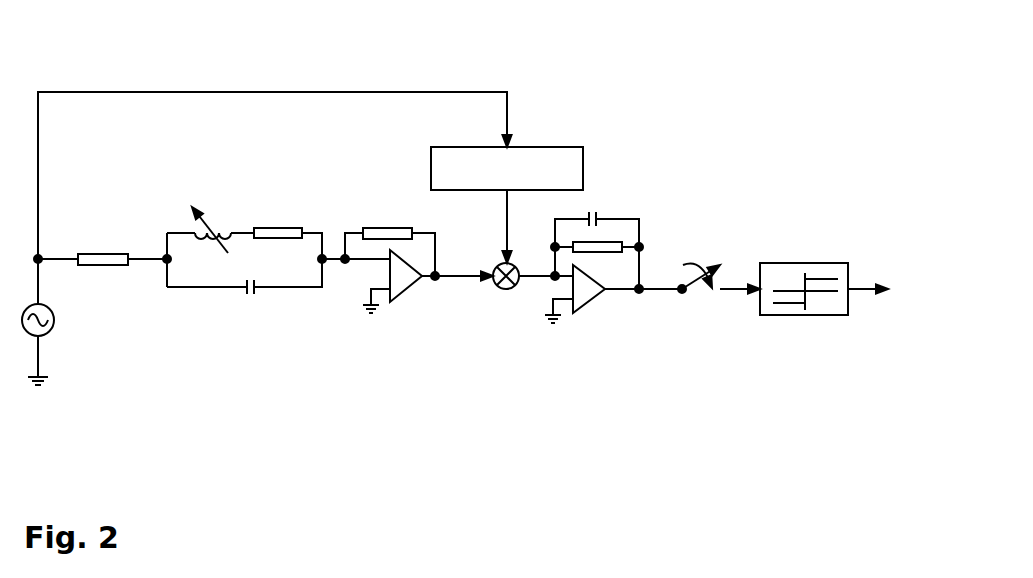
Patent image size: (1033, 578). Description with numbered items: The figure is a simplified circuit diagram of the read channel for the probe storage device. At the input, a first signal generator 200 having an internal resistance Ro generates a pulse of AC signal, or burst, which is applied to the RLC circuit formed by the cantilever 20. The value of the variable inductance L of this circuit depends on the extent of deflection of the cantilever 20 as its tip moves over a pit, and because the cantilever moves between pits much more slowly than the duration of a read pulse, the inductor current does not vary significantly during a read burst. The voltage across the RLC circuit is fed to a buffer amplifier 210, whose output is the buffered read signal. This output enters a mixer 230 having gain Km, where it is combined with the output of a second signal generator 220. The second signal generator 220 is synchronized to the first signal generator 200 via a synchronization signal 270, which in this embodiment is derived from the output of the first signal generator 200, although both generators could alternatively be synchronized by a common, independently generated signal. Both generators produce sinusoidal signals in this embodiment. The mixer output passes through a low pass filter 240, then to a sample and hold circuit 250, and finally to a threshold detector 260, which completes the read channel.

The first signal generator 200 is at (142, 405).
The cantilever 20 is at (157, 405).
The buffer amplifier 210 is at (327, 405).
The second signal generator 220 is at (583, 168).
The mixer 230 is at (535, 405).
The low pass filter 240 is at (632, 405).
The sample and hold circuit 250 is at (642, 405).
The threshold detector 260 is at (838, 405).
The synchronization signal 270 is at (455, 92).